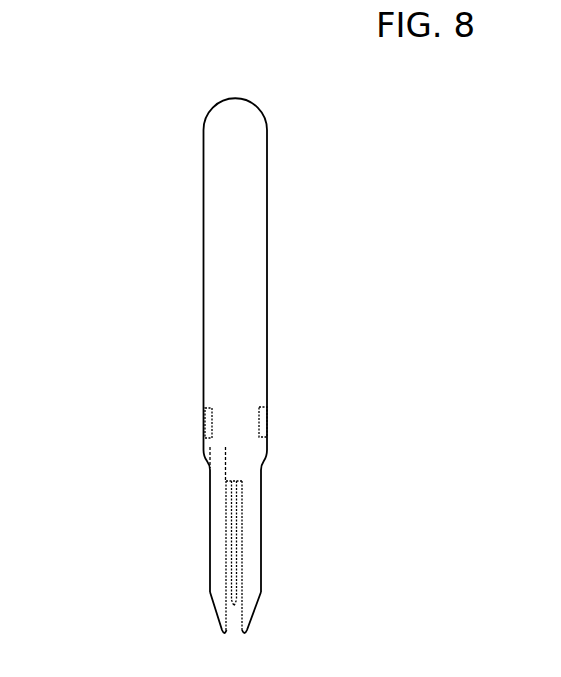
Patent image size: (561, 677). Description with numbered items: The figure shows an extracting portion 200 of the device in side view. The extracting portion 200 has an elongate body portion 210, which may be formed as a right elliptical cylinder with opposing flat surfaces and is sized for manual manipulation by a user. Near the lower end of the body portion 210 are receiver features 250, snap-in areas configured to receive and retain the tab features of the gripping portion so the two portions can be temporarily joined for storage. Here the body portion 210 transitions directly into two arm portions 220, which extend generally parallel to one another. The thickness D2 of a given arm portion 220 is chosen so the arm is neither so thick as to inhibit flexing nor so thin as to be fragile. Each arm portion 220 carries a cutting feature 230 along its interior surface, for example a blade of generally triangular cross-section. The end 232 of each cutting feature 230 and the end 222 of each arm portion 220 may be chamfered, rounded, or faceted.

The extracting portion 200 is at (88, 83).
The body portion 210 is at (211, 198).
The receiver feature 250 is at (207, 427).
The thickness of arm portion D2 is at (258, 460).
The arm portion 220 is at (215, 545).
The cutting feature 230 is at (228, 575).
The end of cutting feature 232 is at (226, 605).
The end of arm portion 222 is at (217, 622).